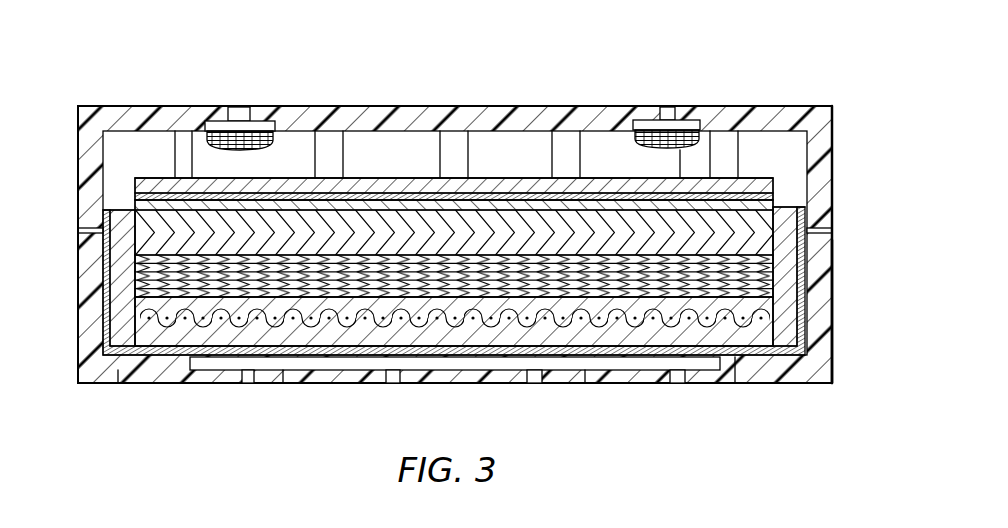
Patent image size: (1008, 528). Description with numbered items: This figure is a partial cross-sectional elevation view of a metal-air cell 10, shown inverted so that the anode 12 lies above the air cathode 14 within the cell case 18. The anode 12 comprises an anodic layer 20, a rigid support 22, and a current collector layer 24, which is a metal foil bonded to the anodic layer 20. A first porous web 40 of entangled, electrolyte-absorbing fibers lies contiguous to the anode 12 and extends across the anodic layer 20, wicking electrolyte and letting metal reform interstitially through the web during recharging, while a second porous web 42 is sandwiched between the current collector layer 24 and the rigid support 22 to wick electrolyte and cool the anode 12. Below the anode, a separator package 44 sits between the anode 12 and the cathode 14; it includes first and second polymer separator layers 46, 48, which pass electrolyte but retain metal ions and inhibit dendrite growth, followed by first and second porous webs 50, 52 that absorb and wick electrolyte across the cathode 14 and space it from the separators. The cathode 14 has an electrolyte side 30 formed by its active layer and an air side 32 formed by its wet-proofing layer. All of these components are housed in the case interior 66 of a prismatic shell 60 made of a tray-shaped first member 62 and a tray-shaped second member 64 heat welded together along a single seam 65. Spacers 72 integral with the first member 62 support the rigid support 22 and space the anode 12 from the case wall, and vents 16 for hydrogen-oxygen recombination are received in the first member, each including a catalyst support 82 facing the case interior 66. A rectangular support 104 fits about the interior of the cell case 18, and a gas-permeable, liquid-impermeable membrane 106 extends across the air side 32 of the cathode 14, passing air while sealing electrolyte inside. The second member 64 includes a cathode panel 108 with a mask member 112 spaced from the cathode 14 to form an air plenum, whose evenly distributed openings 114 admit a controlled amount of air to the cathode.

The metal-air cell 10 is at (358, 75).
The anode 12 is at (131, 222).
The air cathode 14 is at (157, 372).
The vents 16 is at (206, 140).
The cell case 18 is at (834, 369).
The anodic layer 20 is at (392, 215).
The rigid support 22 is at (422, 185).
The current collector layer 24 is at (307, 205).
The electrolyte side 30 is at (545, 346).
The air side 32 is at (440, 350).
The first porous web 40 is at (168, 240).
The second porous web 42 is at (832, 136).
The separator package 44 is at (131, 278).
The first polymer separator layer 46 is at (770, 192).
The second polymer separator layer 48 is at (765, 230).
The first porous web 50 is at (760, 268).
The second porous web 52 is at (760, 285).
The shell 60 is at (78, 162).
The first member 62 is at (832, 118).
The second member 64 is at (833, 345).
The seam 65 is at (103, 232).
The case interior 66 is at (763, 126).
The spacers 72 is at (330, 157).
The catalyst support 82 is at (257, 150).
The rectangular support 104 is at (118, 385).
The membrane 106 is at (283, 385).
The cathode panel 108 is at (735, 385).
The mask member 112 is at (585, 385).
The openings 114 is at (248, 385).